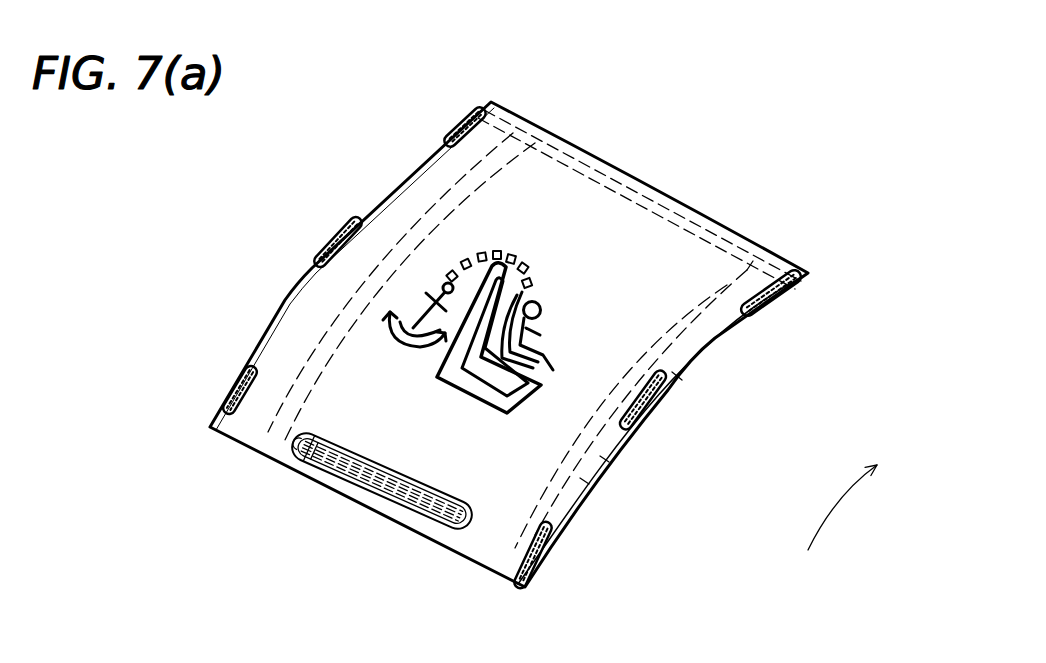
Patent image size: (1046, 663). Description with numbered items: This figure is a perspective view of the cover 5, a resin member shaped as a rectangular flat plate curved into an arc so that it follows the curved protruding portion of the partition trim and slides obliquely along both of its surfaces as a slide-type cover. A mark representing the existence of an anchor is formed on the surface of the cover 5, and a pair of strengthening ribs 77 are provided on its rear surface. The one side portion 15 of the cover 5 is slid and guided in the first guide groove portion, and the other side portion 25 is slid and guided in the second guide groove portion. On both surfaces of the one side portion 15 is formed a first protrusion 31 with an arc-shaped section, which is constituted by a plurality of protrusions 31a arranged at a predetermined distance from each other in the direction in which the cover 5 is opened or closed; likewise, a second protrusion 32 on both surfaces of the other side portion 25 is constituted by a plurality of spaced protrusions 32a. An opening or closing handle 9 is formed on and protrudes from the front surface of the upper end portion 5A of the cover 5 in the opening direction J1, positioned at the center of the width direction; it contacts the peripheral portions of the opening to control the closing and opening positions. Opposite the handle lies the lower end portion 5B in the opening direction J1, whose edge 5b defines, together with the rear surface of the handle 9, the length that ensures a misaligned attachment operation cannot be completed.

The cover 5 is at (160, 220).
The upper end portion 5A is at (465, 548).
The lower end portion 5B is at (620, 205).
The edge 5b is at (687, 197).
The opening or closing handle 9 is at (317, 467).
The one side portion 15 is at (272, 303).
The other side portion 25 is at (583, 483).
The protrusions 31a is at (271, 242).
The first protrusion 31 is at (455, 125).
The protrusions 32a is at (707, 444).
The second protrusion 32 is at (773, 307).
The strengthening ribs 77 is at (439, 197).
The opening direction J1 is at (832, 526).